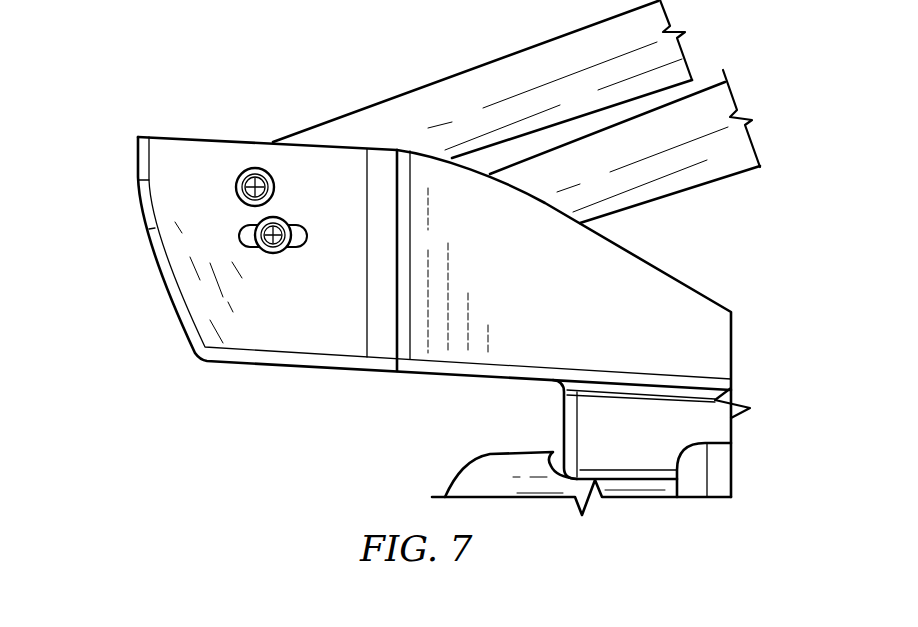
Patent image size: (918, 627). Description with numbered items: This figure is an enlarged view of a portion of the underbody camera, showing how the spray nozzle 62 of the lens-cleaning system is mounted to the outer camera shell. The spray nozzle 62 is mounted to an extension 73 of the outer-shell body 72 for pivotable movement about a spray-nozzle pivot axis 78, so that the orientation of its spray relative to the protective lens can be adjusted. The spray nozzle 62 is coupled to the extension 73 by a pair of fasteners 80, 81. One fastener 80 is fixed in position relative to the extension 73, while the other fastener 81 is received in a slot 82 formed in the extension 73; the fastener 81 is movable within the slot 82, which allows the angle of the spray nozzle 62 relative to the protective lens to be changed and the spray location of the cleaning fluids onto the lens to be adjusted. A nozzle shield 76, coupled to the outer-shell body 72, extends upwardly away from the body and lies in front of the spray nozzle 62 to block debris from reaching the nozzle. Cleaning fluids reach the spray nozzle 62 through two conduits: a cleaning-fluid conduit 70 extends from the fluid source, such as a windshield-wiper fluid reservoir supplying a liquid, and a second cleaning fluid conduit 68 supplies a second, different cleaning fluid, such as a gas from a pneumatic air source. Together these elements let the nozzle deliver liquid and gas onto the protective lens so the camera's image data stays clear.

The spray nozzle 62 is at (318, 175).
The second cleaning fluid conduit 68 is at (517, 78).
The cleaning-fluid conduit 70 is at (727, 154).
The outer-shell body 72 is at (478, 452).
The extension 73 is at (388, 86).
The nozzle shield 76 is at (120, 226).
The spray-nozzle pivot axis 78 is at (256, 168).
The fastener 80 is at (234, 177).
The fastener 81 is at (286, 257).
The slot 82 is at (238, 238).